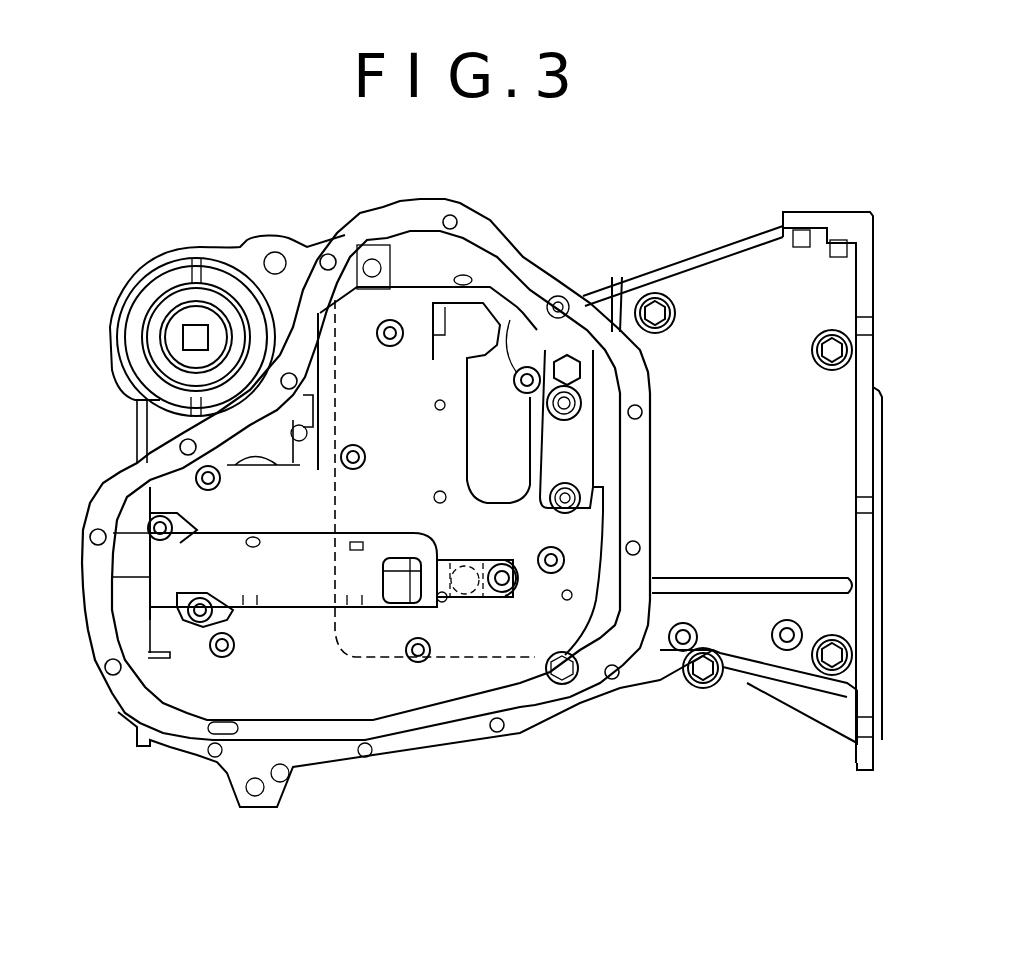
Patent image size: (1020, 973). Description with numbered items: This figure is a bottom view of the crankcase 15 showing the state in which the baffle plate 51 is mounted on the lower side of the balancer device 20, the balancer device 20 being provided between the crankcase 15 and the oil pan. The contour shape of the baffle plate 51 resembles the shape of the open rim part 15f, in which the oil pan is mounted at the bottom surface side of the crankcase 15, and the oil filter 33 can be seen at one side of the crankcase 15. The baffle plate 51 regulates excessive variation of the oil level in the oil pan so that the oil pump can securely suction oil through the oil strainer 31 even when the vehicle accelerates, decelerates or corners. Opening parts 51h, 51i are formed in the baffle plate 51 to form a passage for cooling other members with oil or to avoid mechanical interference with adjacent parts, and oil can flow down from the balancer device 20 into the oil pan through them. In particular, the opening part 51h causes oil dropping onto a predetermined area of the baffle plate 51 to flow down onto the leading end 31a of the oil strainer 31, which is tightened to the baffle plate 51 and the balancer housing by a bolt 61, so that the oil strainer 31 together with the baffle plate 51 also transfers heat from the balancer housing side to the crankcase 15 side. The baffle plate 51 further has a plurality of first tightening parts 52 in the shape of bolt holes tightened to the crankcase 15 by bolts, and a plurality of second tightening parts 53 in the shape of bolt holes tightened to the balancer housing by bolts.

The crankcase 15 is at (730, 250).
The open rim part 15f is at (570, 707).
The balancer device 20 is at (612, 450).
The oil strainer 31 is at (290, 590).
The leading end 31a is at (487, 600).
The oil filter 33 is at (195, 260).
The baffle plate 51 is at (433, 683).
The opening part 51h is at (446, 570).
The opening part 51i is at (465, 455).
The first tightening part 52 is at (185, 463).
The second tightening part 53 is at (393, 325).
The bolt 61 is at (510, 600).